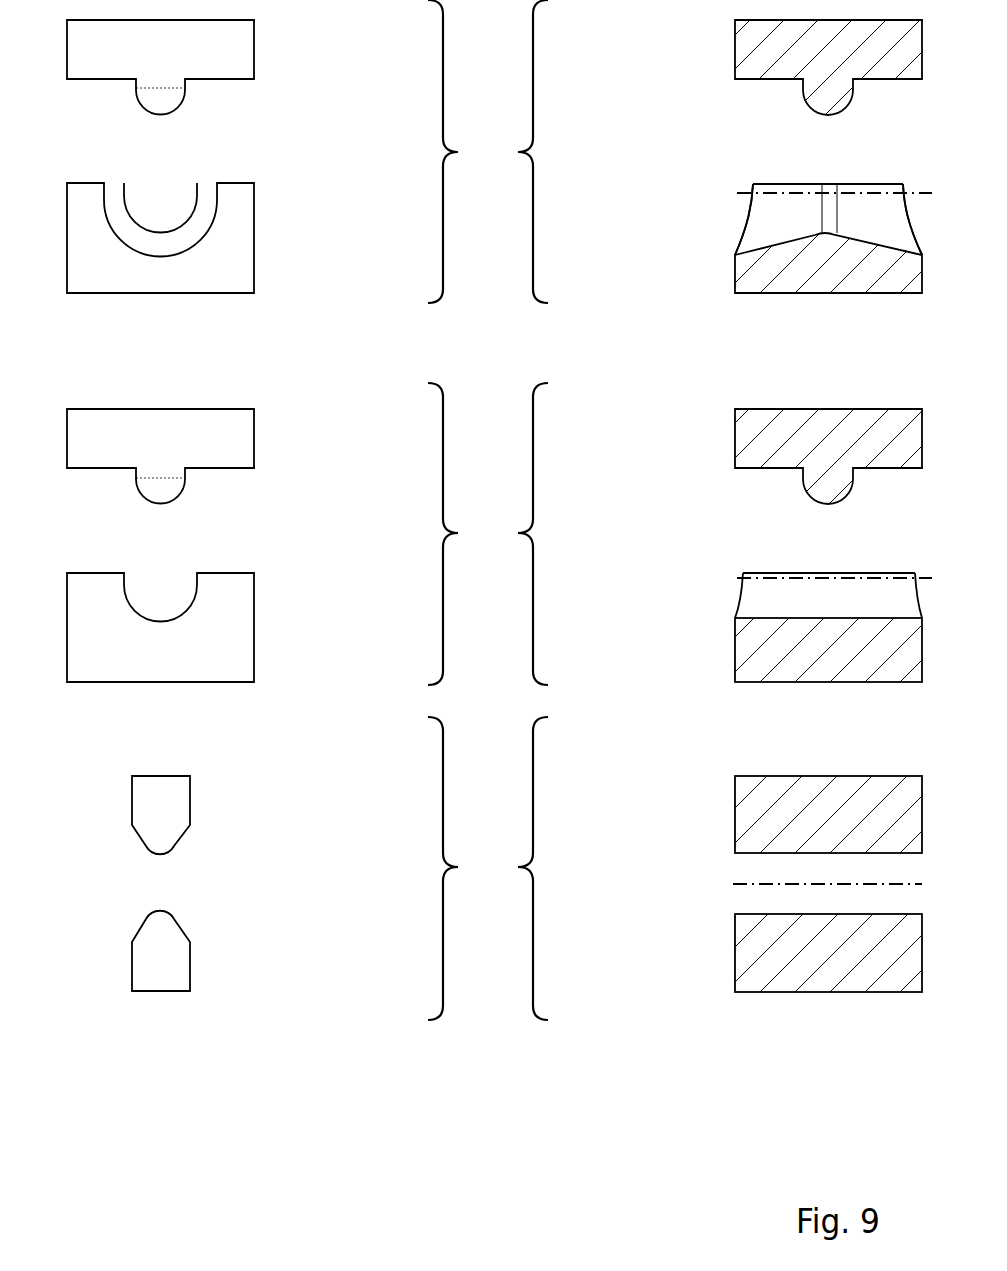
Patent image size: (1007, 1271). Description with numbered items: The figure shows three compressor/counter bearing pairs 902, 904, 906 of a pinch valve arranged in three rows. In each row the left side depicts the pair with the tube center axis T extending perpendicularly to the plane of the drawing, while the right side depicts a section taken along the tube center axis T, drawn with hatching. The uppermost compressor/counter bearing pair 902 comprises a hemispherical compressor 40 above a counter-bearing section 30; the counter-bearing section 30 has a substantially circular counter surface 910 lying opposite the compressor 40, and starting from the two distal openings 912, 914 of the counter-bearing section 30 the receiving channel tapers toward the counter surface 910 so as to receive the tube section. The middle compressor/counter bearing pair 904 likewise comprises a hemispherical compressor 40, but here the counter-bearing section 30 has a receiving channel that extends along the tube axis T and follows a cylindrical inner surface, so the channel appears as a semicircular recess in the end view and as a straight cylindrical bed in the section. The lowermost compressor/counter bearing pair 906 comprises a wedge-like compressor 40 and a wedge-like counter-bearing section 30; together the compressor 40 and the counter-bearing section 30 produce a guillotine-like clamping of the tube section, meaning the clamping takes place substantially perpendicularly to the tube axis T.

The counter-bearing section 30 is at (197, 207).
The compressor 40 is at (148, 98).
The tube center axis T is at (768, 184).
The counter surface 910 is at (828, 208).
The distal opening 912 is at (767, 228).
The distal opening 914 is at (908, 232).
The compressor/counter bearing pair 902 is at (488, 151).
The compressor/counter bearing pair 904 is at (488, 534).
The compressor/counter bearing pair 906 is at (488, 868).